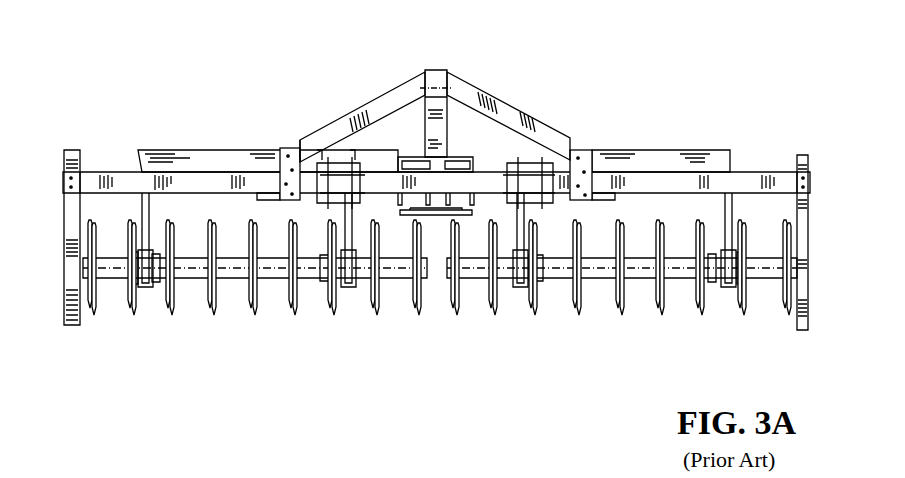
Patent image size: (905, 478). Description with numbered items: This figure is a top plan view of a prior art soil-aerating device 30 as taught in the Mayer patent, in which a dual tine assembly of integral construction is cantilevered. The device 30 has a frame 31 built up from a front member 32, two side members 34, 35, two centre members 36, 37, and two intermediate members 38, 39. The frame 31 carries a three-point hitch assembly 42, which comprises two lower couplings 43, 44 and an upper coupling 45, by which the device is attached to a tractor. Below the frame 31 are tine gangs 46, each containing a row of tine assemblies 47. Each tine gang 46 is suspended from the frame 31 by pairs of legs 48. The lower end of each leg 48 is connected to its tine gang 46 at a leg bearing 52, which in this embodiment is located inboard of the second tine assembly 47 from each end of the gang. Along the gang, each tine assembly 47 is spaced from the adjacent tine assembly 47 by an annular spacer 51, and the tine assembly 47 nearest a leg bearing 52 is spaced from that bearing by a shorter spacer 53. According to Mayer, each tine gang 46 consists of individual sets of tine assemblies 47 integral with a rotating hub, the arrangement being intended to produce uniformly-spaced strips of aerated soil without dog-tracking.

The soil-aerating device 30 is at (166, 54).
The frame 31 is at (95, 160).
The front member 32 is at (199, 165).
The side member 34 is at (126, 160).
The side member 35 is at (745, 172).
The centre member 36 is at (410, 158).
The centre member 37 is at (458, 160).
The intermediate member 38 is at (262, 157).
The intermediate member 39 is at (606, 165).
The three-point hitch assembly 42 is at (392, 90).
The lower coupling 43 is at (330, 147).
The lower coupling 44 is at (540, 148).
The upper coupling 45 is at (452, 92).
The tine gang 46 is at (247, 313).
The tine assembly 47 is at (208, 307).
The leg 48 is at (149, 222).
The annular spacer 51 is at (238, 262).
The leg bearing 52 is at (147, 283).
The shorter spacer 53 is at (156, 250).